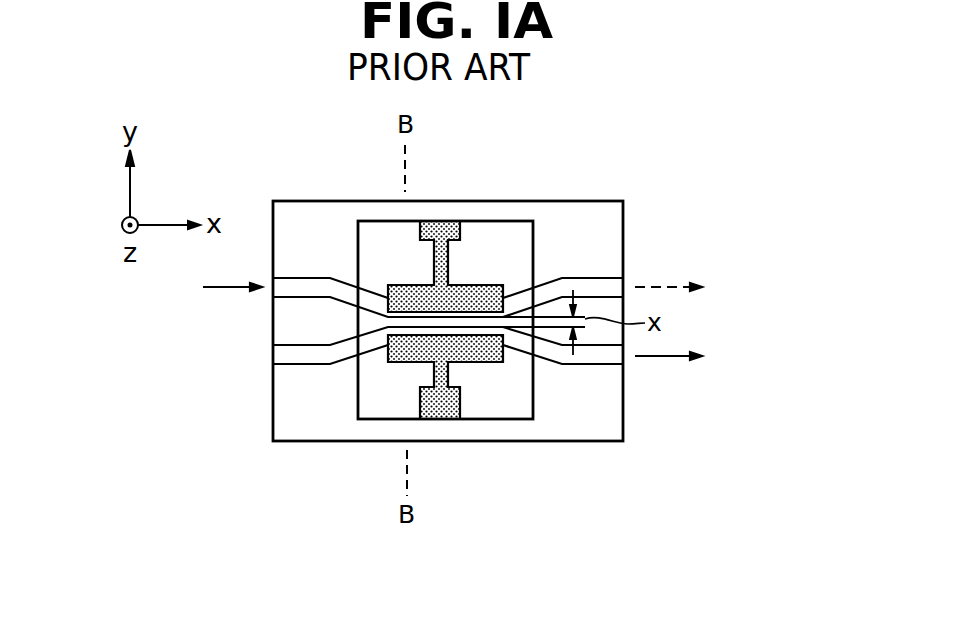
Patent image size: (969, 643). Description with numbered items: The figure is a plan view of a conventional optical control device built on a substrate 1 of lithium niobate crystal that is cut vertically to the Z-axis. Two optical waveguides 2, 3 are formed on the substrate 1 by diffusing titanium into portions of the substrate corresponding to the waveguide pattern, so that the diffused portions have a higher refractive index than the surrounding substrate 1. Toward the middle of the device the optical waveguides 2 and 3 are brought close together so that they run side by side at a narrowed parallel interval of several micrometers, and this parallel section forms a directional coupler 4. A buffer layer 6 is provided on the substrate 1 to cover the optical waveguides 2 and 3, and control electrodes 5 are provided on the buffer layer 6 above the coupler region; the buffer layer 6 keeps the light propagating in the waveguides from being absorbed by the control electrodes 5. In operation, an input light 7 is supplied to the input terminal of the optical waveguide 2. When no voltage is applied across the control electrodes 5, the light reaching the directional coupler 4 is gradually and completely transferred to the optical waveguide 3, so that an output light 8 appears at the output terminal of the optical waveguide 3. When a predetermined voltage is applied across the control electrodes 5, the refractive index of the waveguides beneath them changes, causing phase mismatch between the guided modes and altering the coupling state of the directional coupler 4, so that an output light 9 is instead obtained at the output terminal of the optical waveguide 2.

The substrate 1 is at (588, 221).
The optical waveguide 2 is at (302, 287).
The optical waveguide 3 is at (302, 362).
The directional coupler 4 is at (412, 333).
The control electrodes 5 is at (483, 335).
The buffer layer 6 is at (520, 387).
The input light 7 is at (233, 290).
The output light 8 is at (670, 358).
The output light 9 is at (670, 286).